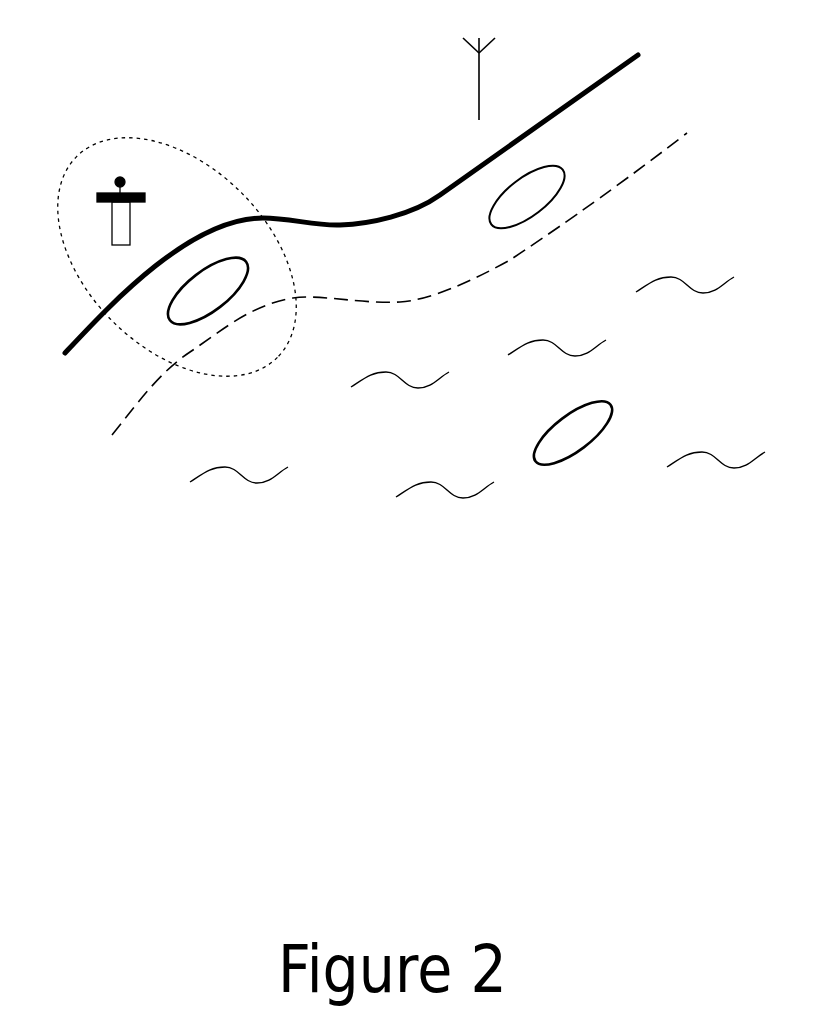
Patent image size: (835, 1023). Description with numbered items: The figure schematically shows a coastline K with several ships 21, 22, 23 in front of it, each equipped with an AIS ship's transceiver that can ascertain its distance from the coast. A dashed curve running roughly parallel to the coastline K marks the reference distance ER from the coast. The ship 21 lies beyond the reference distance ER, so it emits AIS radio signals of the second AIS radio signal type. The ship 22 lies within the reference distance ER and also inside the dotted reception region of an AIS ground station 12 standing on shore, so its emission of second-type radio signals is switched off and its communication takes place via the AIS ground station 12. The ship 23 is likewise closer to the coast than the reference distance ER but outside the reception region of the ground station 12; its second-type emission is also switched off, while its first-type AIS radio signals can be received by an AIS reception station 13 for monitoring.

The AIS ground station 12 is at (177, 257).
The AIS reception station 13 is at (473, 79).
The ship with an AIS ship's transceiver 21 is at (573, 432).
The ship with an AIS ship's transceiver 22 is at (208, 291).
The ship with an AIS ship's transceiver 23 is at (527, 197).
The coastline K is at (362, 189).
The reference distance from the coast ER is at (412, 270).